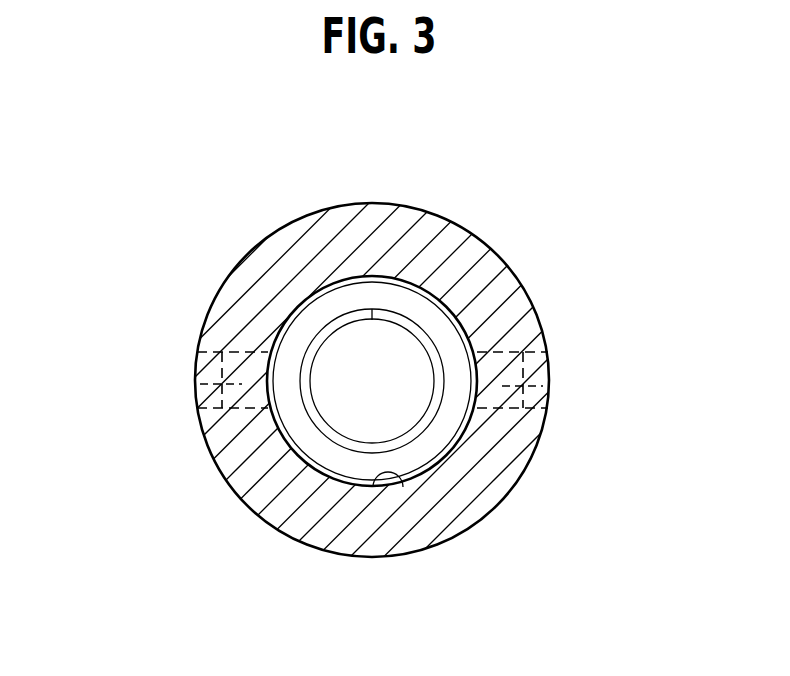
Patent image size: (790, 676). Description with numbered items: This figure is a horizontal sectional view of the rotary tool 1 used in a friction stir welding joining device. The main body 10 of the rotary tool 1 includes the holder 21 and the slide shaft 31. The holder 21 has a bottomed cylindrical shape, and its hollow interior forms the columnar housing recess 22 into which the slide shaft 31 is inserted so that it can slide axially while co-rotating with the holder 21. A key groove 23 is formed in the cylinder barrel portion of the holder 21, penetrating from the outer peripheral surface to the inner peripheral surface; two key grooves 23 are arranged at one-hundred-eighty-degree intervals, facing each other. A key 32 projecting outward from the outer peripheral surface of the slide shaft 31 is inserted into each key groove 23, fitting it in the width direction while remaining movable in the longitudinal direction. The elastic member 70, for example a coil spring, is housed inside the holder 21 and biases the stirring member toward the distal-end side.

The rotary tool 1 is at (250, 172).
The main body 10 is at (517, 230).
The holder 21 is at (525, 288).
The housing recess 22 is at (403, 490).
The key groove 23 is at (195, 372).
The slide shaft 31 is at (378, 272).
The key 32 is at (200, 386).
The elastic member 70 is at (322, 426).